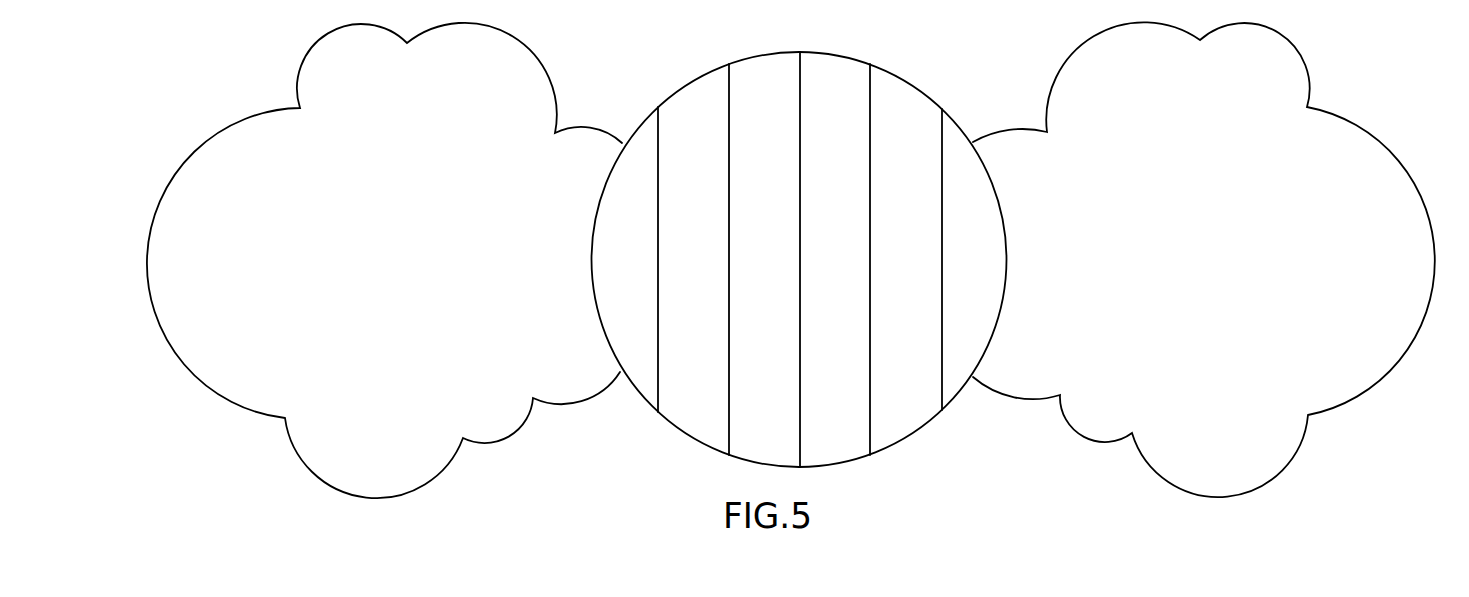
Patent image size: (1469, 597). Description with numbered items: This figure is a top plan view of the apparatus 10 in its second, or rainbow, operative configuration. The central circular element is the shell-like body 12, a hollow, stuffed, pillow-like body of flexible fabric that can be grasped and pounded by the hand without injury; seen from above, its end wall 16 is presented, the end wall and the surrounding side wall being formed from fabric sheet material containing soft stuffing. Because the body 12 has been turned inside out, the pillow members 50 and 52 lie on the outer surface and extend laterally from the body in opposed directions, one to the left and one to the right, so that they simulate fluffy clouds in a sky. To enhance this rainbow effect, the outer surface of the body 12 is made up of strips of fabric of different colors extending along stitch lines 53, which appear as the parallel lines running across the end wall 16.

The apparatus 10 is at (799, 235).
The shell-like body 12 is at (927, 423).
The end wall 16 is at (800, 233).
The pillow member 50 is at (473, 40).
The pillow member 52 is at (1285, 37).
The stitch lines 53 is at (658, 202).